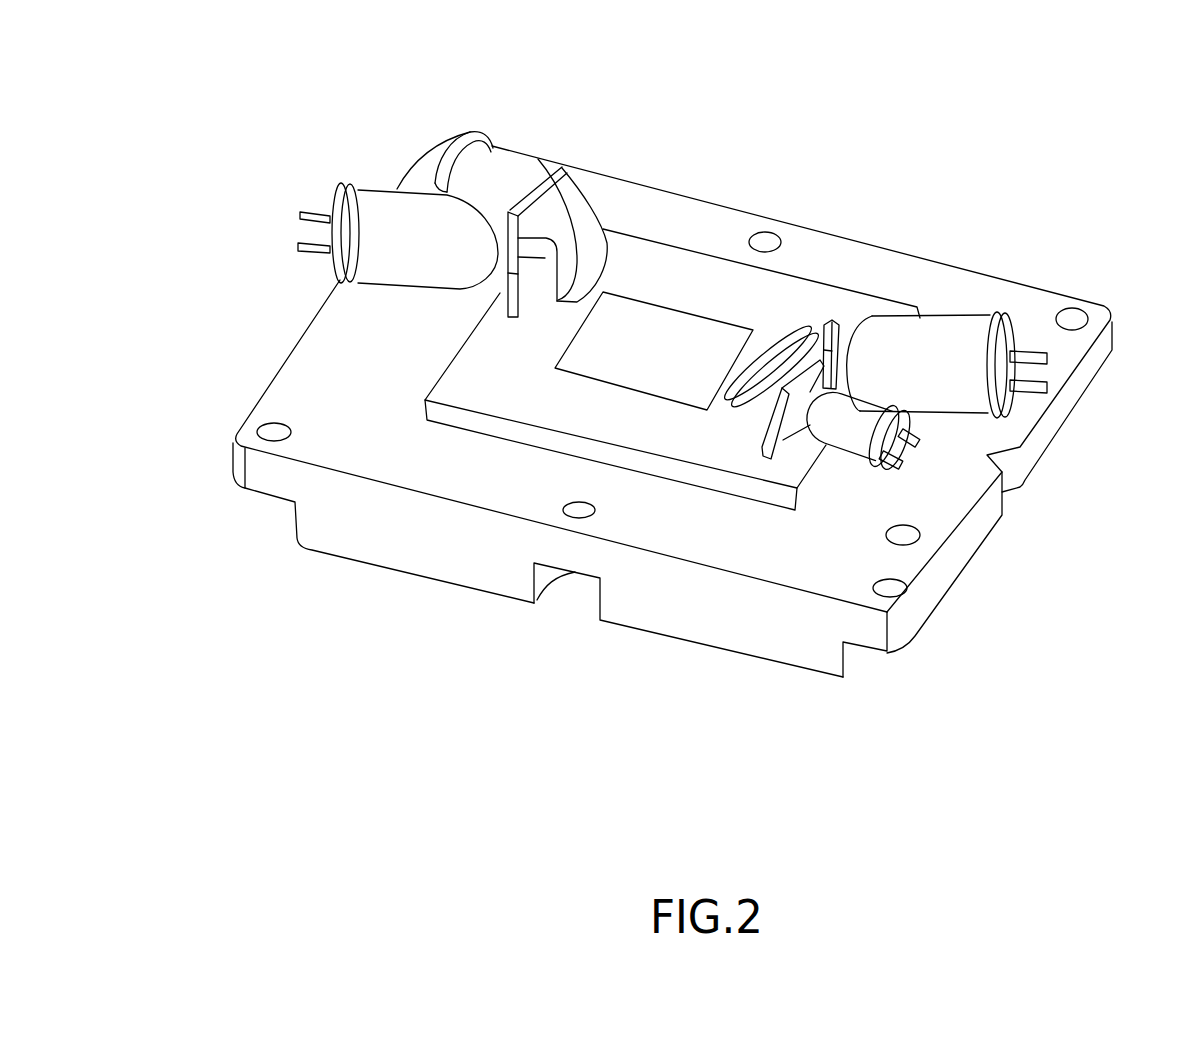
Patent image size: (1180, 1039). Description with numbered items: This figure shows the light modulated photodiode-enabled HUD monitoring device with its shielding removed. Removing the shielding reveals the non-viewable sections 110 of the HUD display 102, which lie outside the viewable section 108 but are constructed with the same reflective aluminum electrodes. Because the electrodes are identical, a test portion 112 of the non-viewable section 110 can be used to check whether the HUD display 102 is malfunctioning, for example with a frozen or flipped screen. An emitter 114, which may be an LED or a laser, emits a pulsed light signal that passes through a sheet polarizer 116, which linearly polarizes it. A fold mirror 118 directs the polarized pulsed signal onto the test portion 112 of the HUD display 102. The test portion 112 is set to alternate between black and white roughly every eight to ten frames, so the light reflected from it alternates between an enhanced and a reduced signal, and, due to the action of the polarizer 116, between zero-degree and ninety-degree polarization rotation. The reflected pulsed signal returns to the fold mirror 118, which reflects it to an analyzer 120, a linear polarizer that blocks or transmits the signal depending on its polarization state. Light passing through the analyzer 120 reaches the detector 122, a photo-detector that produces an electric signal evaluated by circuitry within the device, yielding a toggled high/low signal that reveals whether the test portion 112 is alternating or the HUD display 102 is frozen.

The HUD display 102 is at (615, 385).
The viewable section 108 is at (630, 367).
The non-viewable sections 110 is at (717, 463).
The test portion 112 is at (583, 218).
The emitter 114 is at (960, 348).
The sheet polarizer 116 is at (837, 327).
The fold mirror 118 is at (802, 333).
The analyzer 120 is at (783, 443).
The detector 122 is at (838, 438).